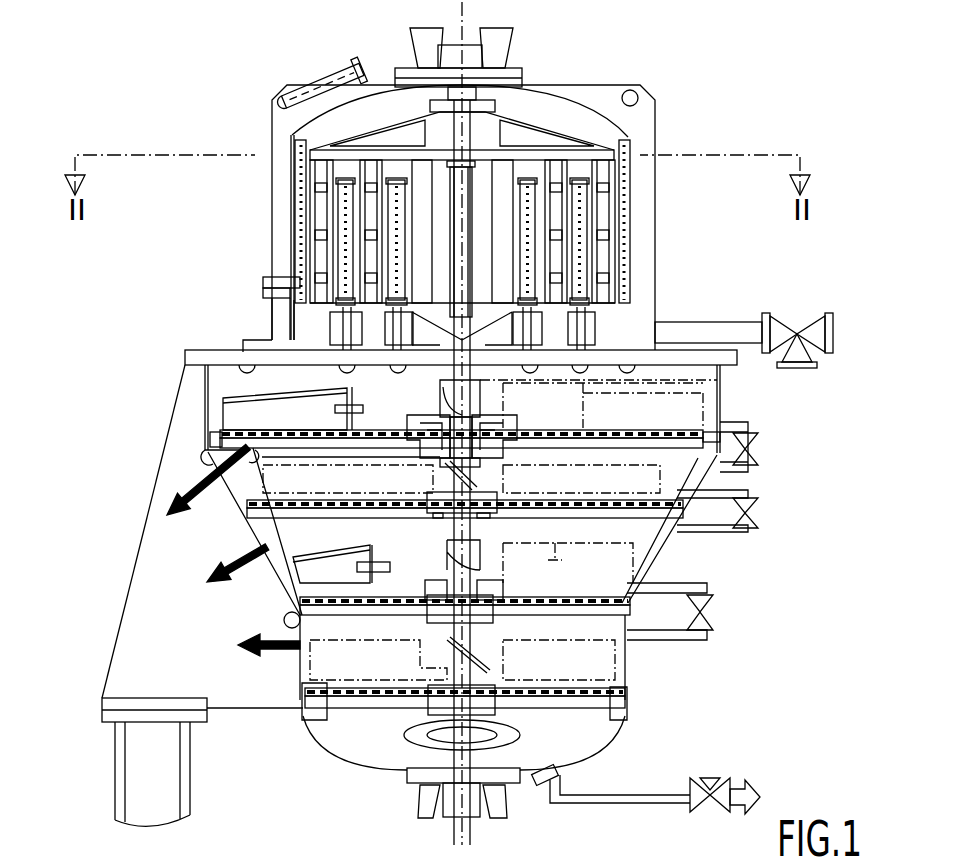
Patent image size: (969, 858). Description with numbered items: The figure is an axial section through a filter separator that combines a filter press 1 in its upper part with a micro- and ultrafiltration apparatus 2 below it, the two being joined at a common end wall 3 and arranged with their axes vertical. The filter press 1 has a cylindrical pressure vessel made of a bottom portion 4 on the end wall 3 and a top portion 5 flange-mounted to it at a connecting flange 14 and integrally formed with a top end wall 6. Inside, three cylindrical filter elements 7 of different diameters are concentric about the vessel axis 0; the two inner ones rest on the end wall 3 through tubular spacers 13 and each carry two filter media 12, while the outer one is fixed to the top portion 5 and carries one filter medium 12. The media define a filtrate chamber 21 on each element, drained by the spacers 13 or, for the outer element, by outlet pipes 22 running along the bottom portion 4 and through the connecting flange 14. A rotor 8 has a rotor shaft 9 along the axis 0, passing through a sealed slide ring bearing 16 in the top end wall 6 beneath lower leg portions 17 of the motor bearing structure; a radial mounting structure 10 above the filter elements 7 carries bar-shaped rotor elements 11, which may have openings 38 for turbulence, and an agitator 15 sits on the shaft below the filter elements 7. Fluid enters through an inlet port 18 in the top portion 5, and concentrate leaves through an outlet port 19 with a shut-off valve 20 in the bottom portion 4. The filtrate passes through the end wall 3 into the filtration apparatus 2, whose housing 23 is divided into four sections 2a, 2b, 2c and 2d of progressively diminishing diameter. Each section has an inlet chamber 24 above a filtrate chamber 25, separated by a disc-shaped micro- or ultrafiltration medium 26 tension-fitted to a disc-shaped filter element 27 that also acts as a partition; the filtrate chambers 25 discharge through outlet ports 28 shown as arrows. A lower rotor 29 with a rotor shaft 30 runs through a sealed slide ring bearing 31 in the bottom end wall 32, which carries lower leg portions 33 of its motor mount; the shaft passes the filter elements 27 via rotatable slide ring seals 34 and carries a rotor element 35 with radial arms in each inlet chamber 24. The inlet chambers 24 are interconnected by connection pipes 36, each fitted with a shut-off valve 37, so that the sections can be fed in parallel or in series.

The vessel axis 0 is at (465, 14).
The filter press 1 is at (668, 100).
The micro- and ultrafiltration apparatus 2 is at (763, 411).
The first section 2a is at (180, 430).
The second section 2b is at (162, 496).
The third section 2c is at (178, 573).
The fourth section 2d is at (193, 655).
The end wall 3 is at (190, 358).
The bottom portion 4 is at (280, 328).
The top portion 5 is at (285, 222).
The top end wall 6 is at (588, 88).
The filter elements 7 is at (627, 238).
The rotor 8 is at (546, 108).
The rotor shaft 9 is at (610, 174).
The radial mounting structure 10 is at (562, 158).
The rotor elements 11 is at (600, 172).
The filter media 12 is at (340, 212).
The tubular spacers 13 is at (583, 330).
The connecting flange 14 is at (263, 283).
The agitator 15 is at (583, 270).
The sealed slide ring bearing 16 is at (415, 40).
The lower leg portions 17 is at (443, 62).
The inlet port 18 is at (325, 83).
The outlet port 19 is at (723, 333).
The shut-off valve 20 is at (778, 330).
The filtrate chamber 21 is at (390, 262).
The outlet pipes 22 is at (272, 310).
The housing 23 is at (610, 555).
The inlet chamber 24 is at (215, 395).
The filtrate chamber 25 is at (705, 437).
The micro- or ultrafiltration medium 26 is at (558, 400).
The disc-shaped filter elements 27 is at (237, 512).
The outlet ports 28 is at (168, 512).
The rotor 29 is at (375, 735).
The rotor shaft 30 is at (427, 737).
The sealed slide ring bearing 31 is at (457, 790).
The bottom end wall 32 is at (607, 735).
The lower leg portions 33 is at (508, 796).
The rotatable slide ring seals 34 is at (405, 403).
The rotor element 35 is at (652, 422).
The connection pipes 36 is at (750, 466).
The shut-off valve 37 is at (753, 522).
The openings 38 is at (590, 195).